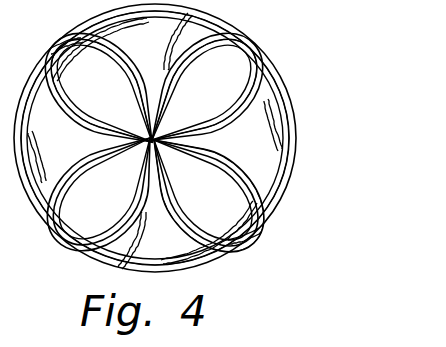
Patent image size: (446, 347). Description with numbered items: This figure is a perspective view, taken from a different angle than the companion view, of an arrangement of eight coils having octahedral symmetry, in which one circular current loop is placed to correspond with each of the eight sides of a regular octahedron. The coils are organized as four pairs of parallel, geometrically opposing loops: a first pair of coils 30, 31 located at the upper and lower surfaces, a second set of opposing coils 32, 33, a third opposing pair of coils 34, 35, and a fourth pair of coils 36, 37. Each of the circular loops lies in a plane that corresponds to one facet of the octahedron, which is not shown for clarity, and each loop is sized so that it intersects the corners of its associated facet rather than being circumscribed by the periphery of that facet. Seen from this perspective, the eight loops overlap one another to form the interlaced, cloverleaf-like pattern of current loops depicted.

The coil 30 is at (250, 108).
The coil 31 is at (262, 178).
The coil 32 is at (276, 121).
The coil 33 is at (132, 48).
The coil 34 is at (293, 165).
The coil 35 is at (113, 62).
The coil 36 is at (230, 205).
The coil 37 is at (240, 98).